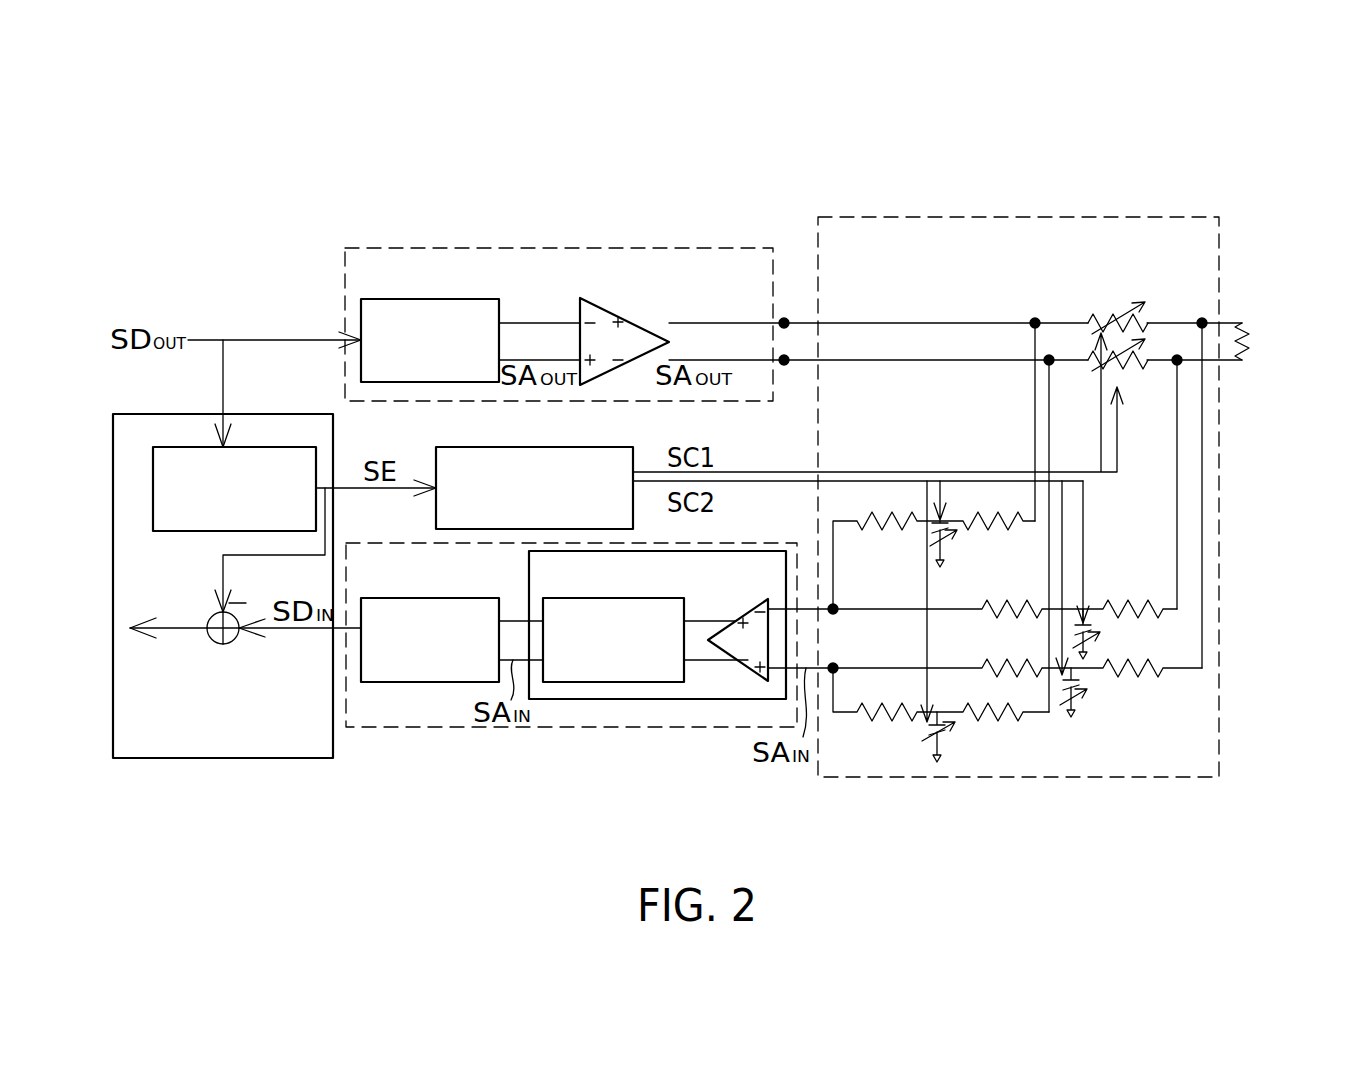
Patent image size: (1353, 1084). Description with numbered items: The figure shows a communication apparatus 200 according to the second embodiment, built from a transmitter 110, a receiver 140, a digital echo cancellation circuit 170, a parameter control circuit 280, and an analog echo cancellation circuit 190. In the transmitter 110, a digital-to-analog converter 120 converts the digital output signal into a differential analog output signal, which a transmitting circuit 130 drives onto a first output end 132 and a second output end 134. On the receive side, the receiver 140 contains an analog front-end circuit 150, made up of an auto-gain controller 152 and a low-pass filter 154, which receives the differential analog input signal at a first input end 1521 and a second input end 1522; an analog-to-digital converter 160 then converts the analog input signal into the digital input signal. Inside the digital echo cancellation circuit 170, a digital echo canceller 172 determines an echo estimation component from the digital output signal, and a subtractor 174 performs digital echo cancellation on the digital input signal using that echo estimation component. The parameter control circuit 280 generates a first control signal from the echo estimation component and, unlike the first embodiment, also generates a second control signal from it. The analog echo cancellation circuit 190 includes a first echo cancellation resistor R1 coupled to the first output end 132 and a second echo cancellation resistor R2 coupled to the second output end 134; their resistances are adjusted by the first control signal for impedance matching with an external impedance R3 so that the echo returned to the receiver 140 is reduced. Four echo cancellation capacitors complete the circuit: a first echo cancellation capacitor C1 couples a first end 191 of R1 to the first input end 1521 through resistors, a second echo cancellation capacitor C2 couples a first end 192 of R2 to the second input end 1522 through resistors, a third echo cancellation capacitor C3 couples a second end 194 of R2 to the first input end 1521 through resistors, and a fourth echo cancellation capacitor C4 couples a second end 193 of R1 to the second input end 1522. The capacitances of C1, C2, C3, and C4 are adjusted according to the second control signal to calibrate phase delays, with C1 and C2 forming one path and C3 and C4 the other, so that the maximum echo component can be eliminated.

The transmitter 110 is at (546, 248).
The digital-to-analog converter 120 is at (430, 299).
The transmitting circuit 130 is at (610, 313).
The first output end 132 is at (785, 318).
The second output end 134 is at (784, 365).
The receiver 140 is at (490, 727).
The analog front-end circuit 150 is at (565, 699).
The auto-gain controller 152 is at (748, 668).
The low-pass filter 154 is at (613, 682).
The analog-to-digital converter 160 is at (428, 682).
The digital echo cancellation circuit 170 is at (221, 758).
The digital echo canceller 172 is at (153, 488).
The subtractor 174 is at (211, 617).
The analog echo cancellation circuit 190 is at (1021, 217).
The first end of the first echo cancellation resistor 191 is at (1199, 320).
The first end of the second echo cancellation resistor 192 is at (1175, 362).
The second end of the first echo cancellation resistor 193 is at (1032, 320).
The second end of the second echo cancellation resistor 194 is at (1051, 362).
The communication apparatus 200 is at (1193, 190).
The parameter control circuit 280 is at (587, 447).
The first input end 1521 is at (835, 666).
The second input end 1522 is at (835, 607).
The first echo cancellation resistor R1 is at (1118, 307).
The second echo cancellation resistor R2 is at (1137, 351).
The external impedance R3 is at (1259, 341).
The first echo cancellation capacitor C1 is at (1091, 694).
The second echo cancellation capacitor C2 is at (1099, 634).
The third echo cancellation capacitor C3 is at (952, 737).
The fourth echo cancellation capacitor C4 is at (957, 546).